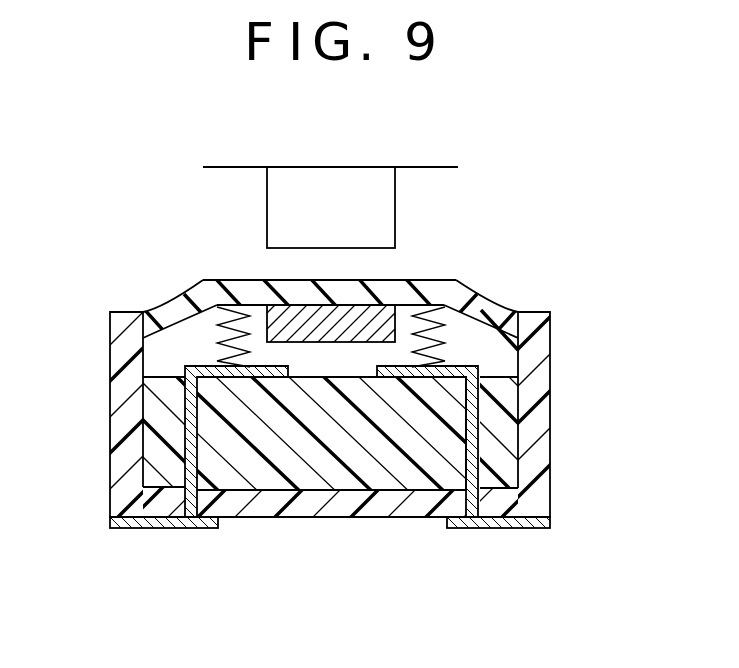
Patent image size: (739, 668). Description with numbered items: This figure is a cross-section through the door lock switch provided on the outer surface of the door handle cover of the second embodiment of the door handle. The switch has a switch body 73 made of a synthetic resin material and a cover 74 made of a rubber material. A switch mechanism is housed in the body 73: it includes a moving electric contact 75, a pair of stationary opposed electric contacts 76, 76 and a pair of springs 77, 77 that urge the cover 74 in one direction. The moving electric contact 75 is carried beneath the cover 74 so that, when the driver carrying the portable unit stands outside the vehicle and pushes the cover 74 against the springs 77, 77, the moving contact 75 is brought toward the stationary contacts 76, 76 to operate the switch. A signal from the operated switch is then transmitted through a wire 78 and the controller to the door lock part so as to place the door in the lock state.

The switch body 73 is at (543, 429).
The cover 74 is at (255, 293).
The moving electric contact 75 is at (372, 313).
The stationary opposed electric contacts 76 is at (203, 365).
The springs 77 is at (215, 350).
The wire 78 is at (167, 530).